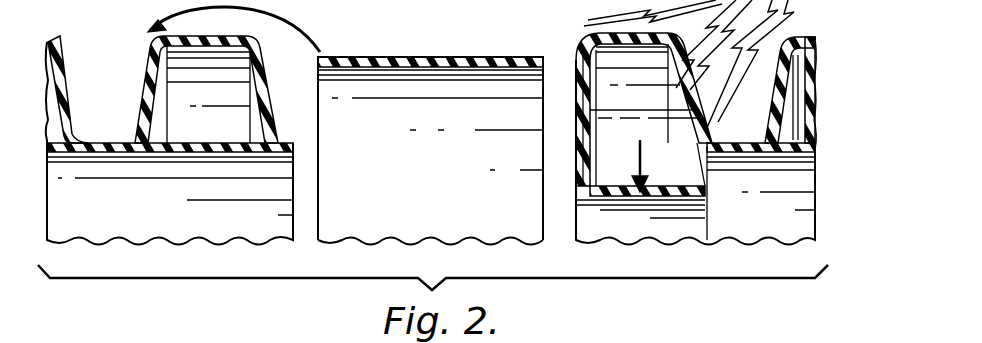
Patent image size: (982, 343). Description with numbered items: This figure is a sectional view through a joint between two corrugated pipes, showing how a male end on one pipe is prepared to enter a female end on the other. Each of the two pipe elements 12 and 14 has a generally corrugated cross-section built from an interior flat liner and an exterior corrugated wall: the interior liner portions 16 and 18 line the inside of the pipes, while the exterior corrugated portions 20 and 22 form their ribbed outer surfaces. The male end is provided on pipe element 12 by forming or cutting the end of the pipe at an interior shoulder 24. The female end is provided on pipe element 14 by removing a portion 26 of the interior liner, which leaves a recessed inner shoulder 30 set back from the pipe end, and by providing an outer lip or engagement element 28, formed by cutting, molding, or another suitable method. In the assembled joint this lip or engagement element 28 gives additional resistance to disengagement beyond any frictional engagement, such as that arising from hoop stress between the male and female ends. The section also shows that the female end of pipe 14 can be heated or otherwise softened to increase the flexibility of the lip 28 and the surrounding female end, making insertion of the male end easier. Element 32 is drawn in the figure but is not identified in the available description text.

The pipe element 12 is at (62, 45).
The pipe element 14 is at (745, 202).
The interior liner portion 16 is at (786, 152).
The interior liner portion 18 is at (200, 152).
The exterior corrugated portion 20 is at (788, 38).
The exterior corrugated portion 22 is at (147, 68).
The interior shoulder 24 is at (303, 148).
The removed portion 26 is at (625, 194).
The outer lip or engagement element 28 is at (578, 62).
The recessed inner shoulder 30 is at (702, 148).
The oxide layer 32 is at (437, 57).